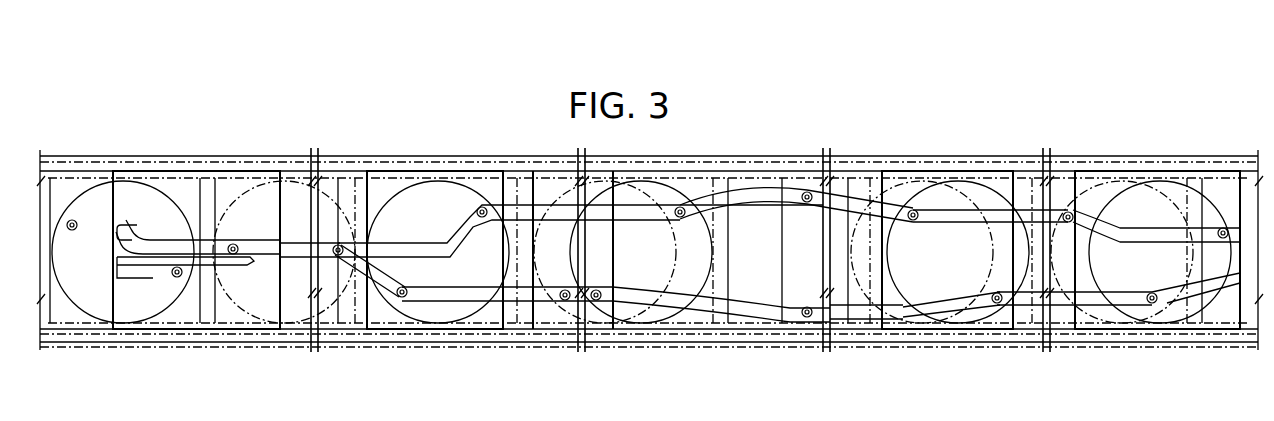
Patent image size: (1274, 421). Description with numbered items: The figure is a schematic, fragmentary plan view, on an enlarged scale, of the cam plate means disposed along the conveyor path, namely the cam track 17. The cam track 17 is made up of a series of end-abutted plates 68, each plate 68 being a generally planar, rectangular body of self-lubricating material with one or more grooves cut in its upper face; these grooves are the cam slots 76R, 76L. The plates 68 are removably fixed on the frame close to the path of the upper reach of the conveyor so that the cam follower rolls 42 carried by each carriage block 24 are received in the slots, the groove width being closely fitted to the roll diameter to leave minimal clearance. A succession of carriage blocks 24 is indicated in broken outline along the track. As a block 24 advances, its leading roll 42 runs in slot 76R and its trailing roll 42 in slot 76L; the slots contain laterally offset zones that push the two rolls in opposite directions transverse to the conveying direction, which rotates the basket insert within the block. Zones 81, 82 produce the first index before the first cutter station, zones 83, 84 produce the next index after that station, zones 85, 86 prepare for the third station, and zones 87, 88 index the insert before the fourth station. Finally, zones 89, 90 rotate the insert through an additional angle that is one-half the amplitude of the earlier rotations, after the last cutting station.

The cam track 17 is at (397, 332).
The carriage block 24 is at (490, 177).
The cam follower roll 42 is at (243, 243).
The plate 68 is at (207, 318).
The cam slot 76L is at (170, 247).
The cam slot 76R is at (157, 273).
The zone 81 is at (250, 267).
The zone 82 is at (137, 230).
The zone 83 is at (467, 227).
The zone 84 is at (385, 273).
The zone 85 is at (743, 195).
The zone 86 is at (700, 307).
The zone 87 is at (902, 312).
The zone 88 is at (893, 205).
The zone 89 is at (1180, 295).
The zone 90 is at (1098, 227).